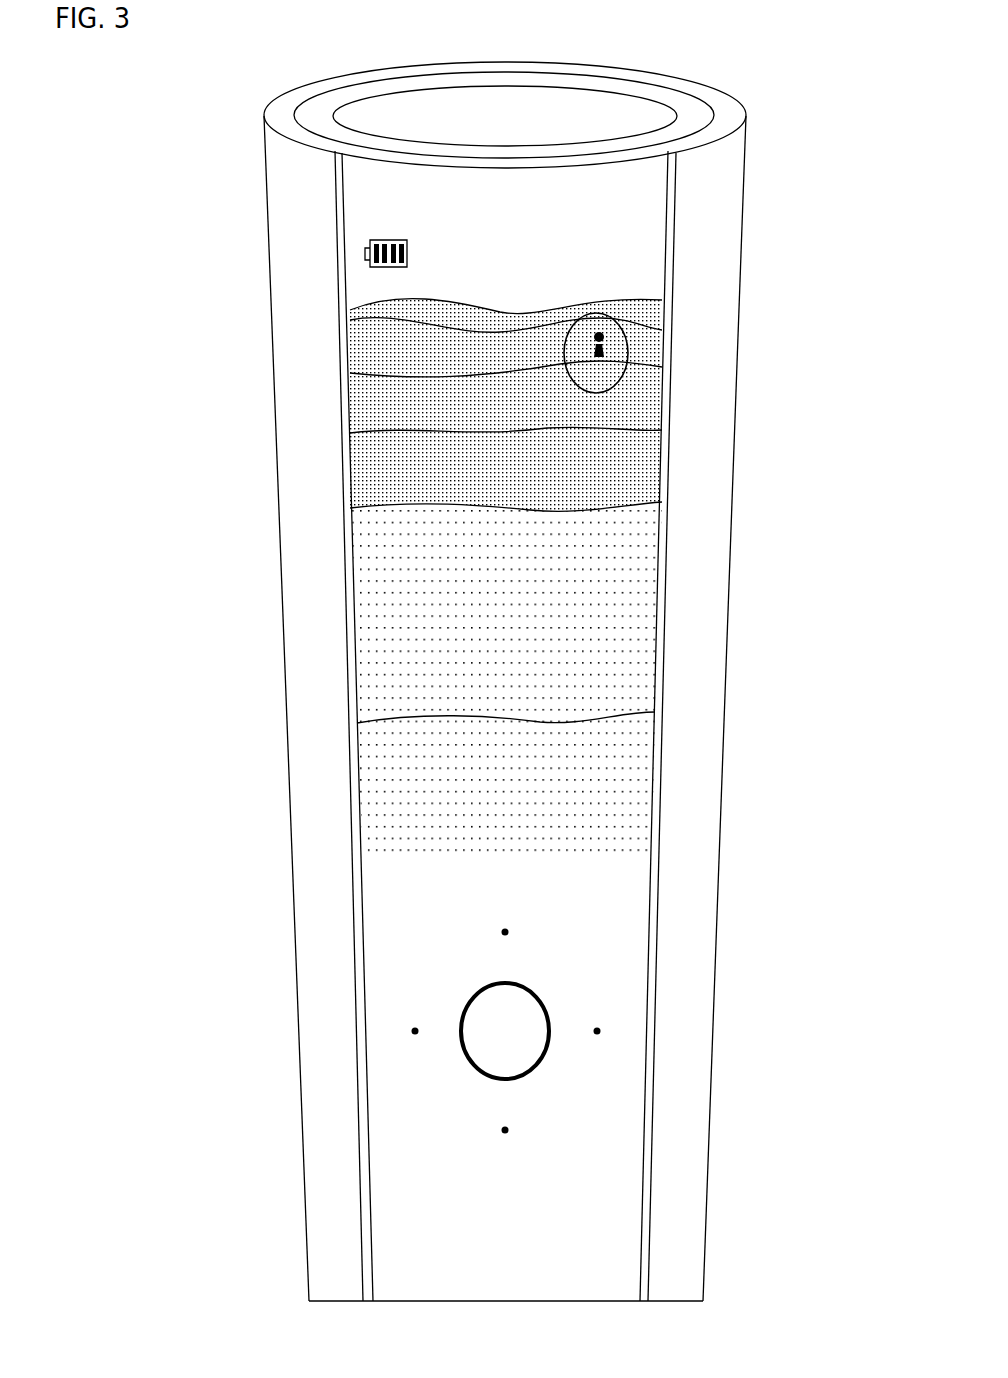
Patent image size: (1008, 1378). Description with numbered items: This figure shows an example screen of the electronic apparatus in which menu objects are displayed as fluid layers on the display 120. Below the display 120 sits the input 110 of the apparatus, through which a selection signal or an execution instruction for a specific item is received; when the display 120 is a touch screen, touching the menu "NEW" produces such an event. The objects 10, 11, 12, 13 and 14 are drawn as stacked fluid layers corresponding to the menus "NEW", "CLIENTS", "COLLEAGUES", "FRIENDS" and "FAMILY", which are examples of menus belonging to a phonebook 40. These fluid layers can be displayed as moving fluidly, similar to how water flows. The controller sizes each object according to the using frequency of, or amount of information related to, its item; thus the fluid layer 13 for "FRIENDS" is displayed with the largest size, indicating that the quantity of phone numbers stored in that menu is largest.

The input 110 is at (363, 1020).
The display 120 is at (340, 250).
The object 10 is at (370, 345).
The object 11 is at (375, 405).
The object 12 is at (367, 477).
The fluid layer 13 is at (375, 595).
The object 14 is at (380, 752).
The phonebook 40 is at (632, 343).